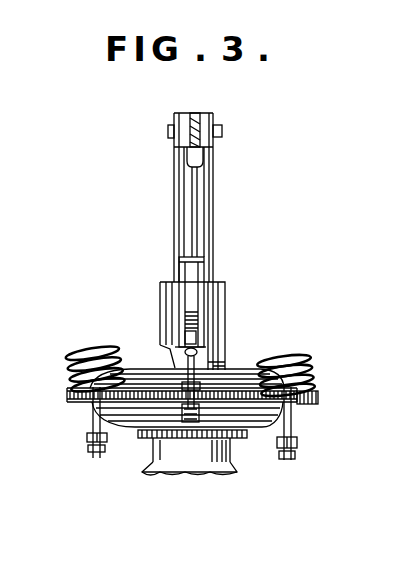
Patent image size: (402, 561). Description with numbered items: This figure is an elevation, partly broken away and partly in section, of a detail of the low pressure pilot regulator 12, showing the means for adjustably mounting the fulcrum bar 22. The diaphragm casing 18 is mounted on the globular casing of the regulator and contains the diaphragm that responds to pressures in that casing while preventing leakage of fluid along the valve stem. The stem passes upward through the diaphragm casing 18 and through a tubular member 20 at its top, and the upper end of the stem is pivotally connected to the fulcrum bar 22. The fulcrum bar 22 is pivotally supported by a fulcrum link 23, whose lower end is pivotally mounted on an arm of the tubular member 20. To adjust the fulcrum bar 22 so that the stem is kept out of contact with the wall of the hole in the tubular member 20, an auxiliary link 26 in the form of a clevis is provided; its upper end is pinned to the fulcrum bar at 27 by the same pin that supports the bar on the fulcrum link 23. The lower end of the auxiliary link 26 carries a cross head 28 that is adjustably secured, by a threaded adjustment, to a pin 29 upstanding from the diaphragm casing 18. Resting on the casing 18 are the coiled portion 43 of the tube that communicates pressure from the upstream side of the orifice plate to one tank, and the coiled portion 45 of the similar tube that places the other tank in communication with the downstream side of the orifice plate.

The low pressure pilot regulator 12 is at (212, 478).
The diaphragm casing 18 is at (318, 396).
The tubular member 20 is at (220, 334).
The fulcrum bar 22 is at (197, 112).
The fulcrum link 23 is at (198, 220).
The auxiliary link 26 is at (213, 190).
The pin connection of auxiliary link to fulcrum bar 27 is at (222, 131).
The cross head 28 is at (224, 351).
The pin 29 is at (165, 357).
The coiled portion of tube 43 is at (312, 362).
The coiled portion of similar tube 45 is at (70, 366).